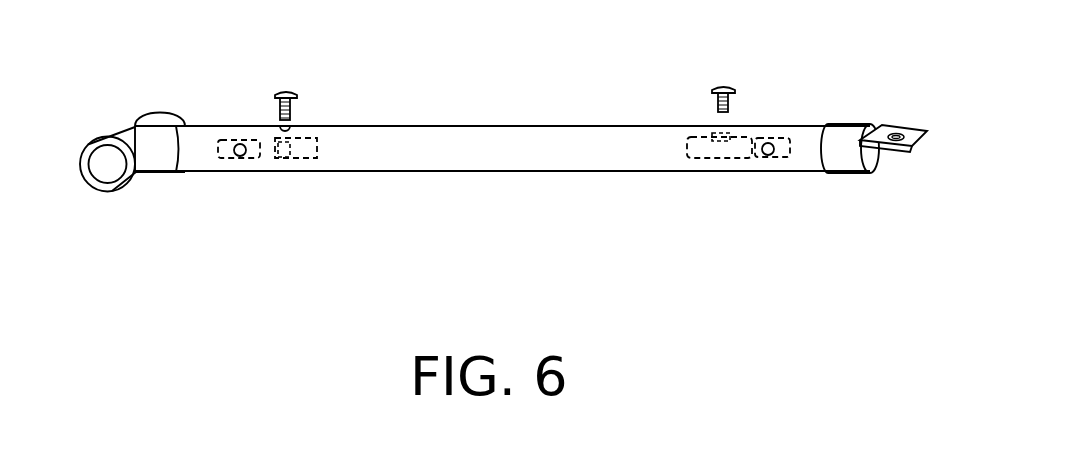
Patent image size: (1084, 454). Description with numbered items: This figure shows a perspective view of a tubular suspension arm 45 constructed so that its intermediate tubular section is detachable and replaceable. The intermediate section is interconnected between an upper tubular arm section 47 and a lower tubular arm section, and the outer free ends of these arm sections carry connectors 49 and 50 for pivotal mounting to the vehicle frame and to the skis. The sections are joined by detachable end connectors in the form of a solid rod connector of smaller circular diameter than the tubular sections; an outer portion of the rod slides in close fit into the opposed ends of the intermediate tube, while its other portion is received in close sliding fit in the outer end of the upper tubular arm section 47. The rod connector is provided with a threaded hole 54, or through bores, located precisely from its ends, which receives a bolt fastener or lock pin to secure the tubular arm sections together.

The tubular suspension arm 45 is at (502, 112).
The upper tubular arm section 47 is at (203, 142).
The connector 49 is at (852, 152).
The connector 50 is at (135, 126).
The threaded hole 54 is at (693, 137).